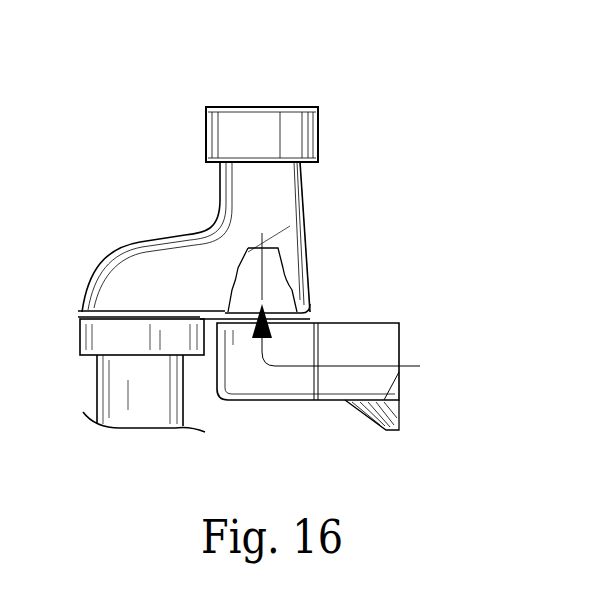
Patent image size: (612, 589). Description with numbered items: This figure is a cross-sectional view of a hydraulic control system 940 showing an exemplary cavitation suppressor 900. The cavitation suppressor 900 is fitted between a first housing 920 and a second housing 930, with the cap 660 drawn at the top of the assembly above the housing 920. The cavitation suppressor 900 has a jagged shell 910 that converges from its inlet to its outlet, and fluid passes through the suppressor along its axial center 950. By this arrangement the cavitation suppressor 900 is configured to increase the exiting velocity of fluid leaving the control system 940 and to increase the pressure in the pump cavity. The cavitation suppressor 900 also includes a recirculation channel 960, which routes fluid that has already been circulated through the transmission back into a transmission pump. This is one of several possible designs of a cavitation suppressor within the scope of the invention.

The control system 940 is at (408, 118).
The cap 660 is at (258, 106).
The housing 920 is at (313, 168).
The cavitation suppressor 900 is at (250, 248).
The axial center 950 is at (290, 272).
The jagged shell 910 is at (315, 278).
The recirculation channel 960 is at (358, 350).
The housing 930 is at (135, 432).